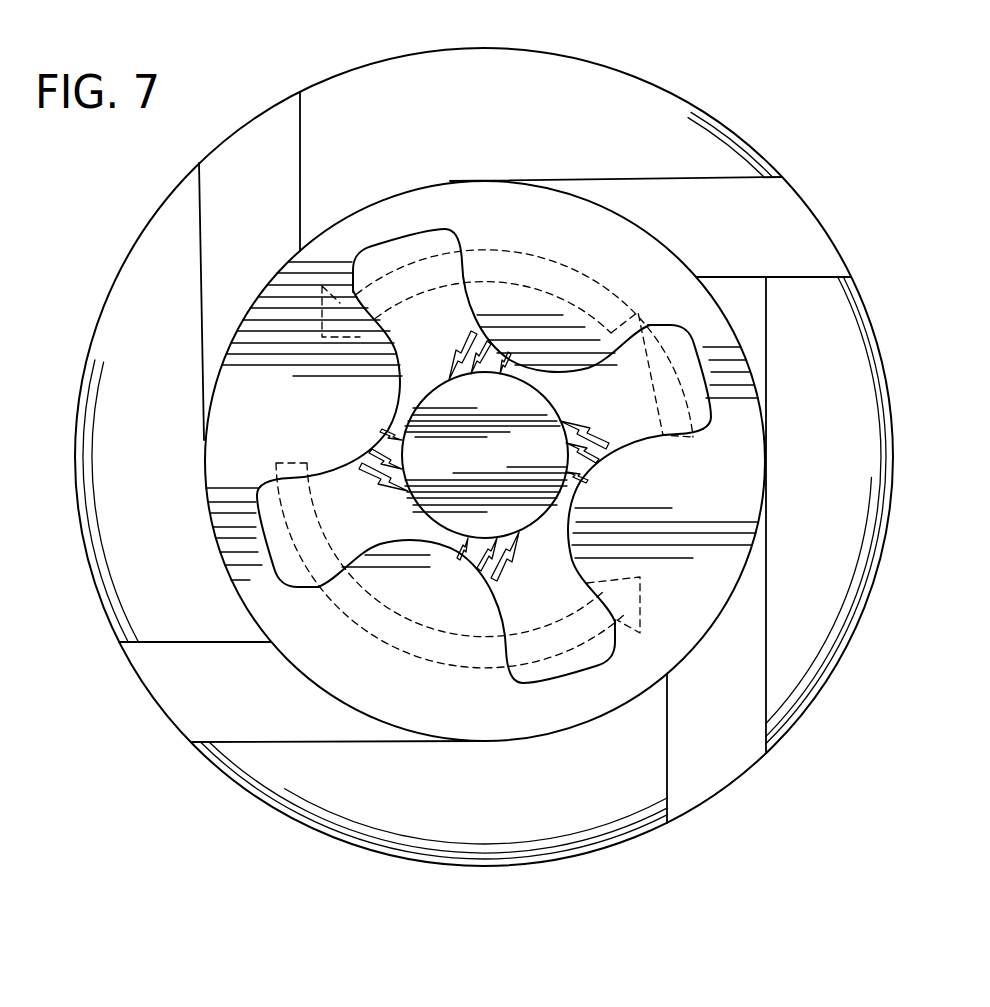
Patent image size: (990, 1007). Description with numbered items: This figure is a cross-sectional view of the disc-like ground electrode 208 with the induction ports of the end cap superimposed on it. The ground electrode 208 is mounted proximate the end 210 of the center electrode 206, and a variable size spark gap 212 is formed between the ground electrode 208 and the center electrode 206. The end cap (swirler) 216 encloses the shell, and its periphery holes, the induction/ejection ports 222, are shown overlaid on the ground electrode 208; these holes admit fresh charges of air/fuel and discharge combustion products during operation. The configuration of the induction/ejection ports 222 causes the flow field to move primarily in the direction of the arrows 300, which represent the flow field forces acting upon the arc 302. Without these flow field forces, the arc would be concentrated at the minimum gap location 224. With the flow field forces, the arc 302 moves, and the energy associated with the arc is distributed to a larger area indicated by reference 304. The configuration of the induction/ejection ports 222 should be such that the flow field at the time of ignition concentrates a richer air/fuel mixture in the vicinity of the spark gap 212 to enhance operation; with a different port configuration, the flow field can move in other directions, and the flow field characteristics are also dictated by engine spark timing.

The center electrode 206 is at (432, 547).
The ground electrode 208 is at (727, 462).
The end of the center electrode 210 is at (486, 455).
The variable size spark gap 212 is at (503, 605).
The end cap (swirler) 216 is at (843, 525).
The induction/ejection ports 222 is at (188, 693).
The minimum gap location 224 is at (500, 418).
The arrows representing flow field forces 300 is at (636, 310).
The arc 302 is at (348, 446).
The larger area of arc energy distribution 304 is at (490, 305).